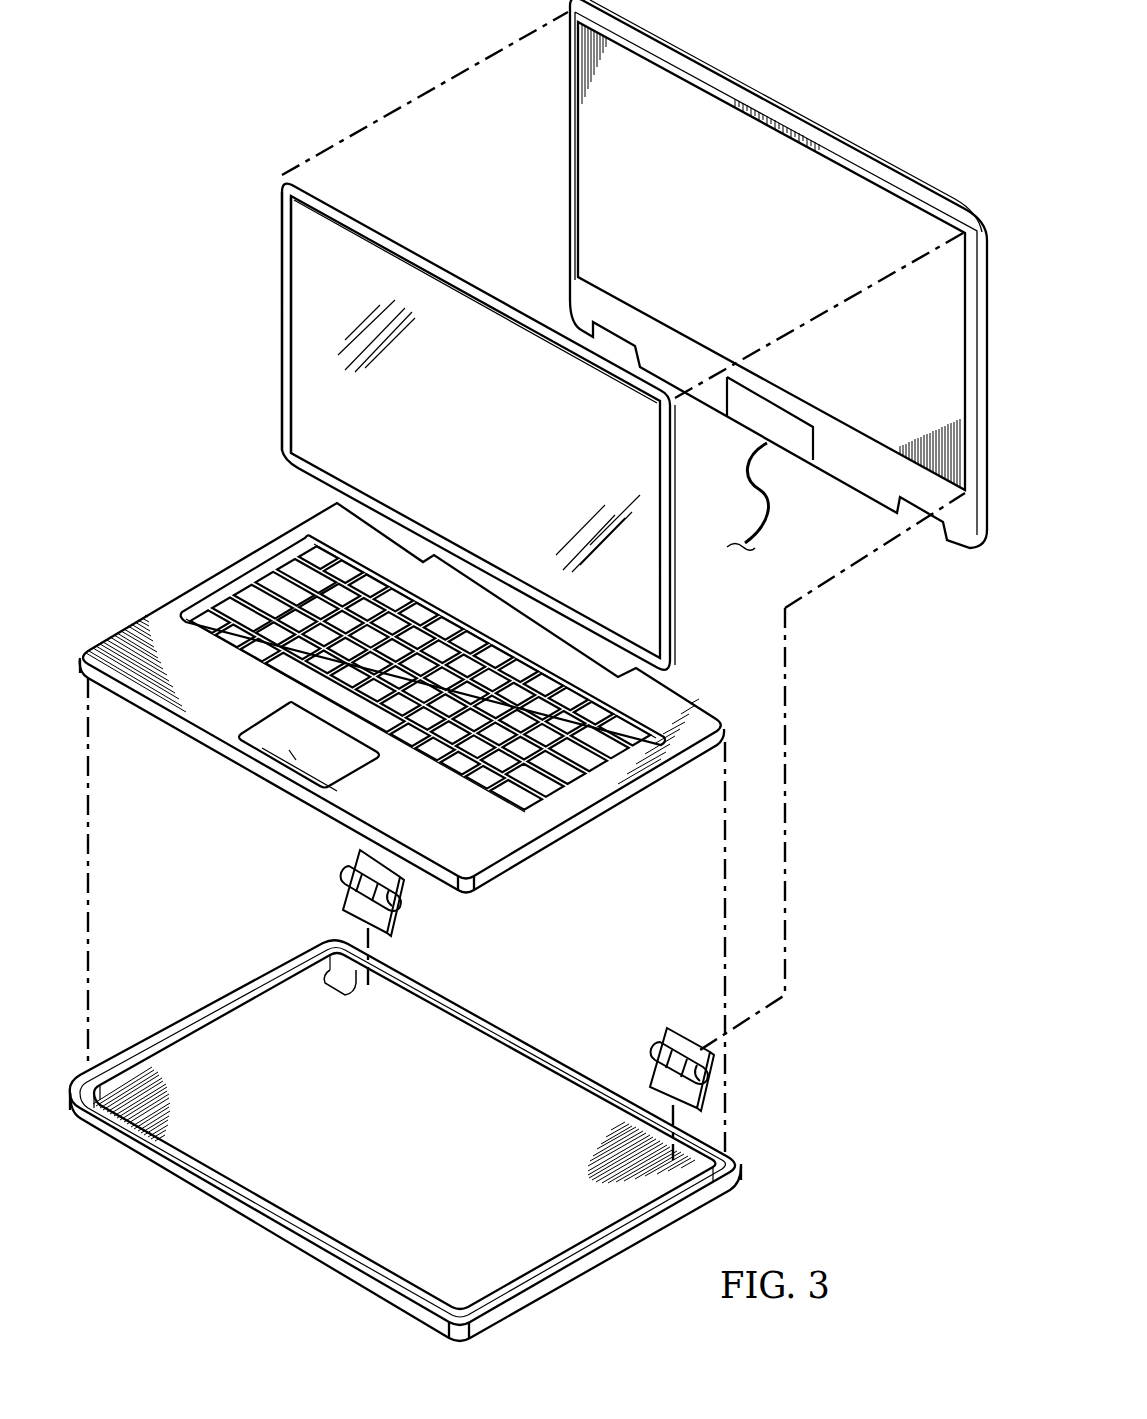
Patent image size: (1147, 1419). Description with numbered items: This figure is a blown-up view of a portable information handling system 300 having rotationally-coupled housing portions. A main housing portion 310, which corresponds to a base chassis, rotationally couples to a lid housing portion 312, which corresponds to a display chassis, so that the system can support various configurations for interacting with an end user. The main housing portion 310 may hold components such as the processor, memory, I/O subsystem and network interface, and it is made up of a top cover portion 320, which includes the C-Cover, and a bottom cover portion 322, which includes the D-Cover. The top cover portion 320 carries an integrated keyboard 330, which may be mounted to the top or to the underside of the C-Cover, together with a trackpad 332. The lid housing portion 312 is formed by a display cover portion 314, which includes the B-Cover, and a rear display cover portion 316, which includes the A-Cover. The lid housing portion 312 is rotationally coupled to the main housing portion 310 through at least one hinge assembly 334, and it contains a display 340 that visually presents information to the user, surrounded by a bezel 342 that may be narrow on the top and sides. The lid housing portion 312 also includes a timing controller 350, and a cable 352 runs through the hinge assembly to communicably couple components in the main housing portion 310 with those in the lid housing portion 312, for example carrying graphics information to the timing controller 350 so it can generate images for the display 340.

The portable information handling system 300 is at (203, 117).
The main housing portion 310 is at (127, 566).
The lid housing portion 312 is at (368, 75).
The display cover portion 314 is at (283, 385).
The rear display cover portion 316 is at (780, 102).
The top cover portion 320 is at (178, 722).
The bottom cover portion 322 is at (262, 1223).
The keyboard 330 is at (236, 584).
The trackpad 332 is at (293, 740).
The hinge assembly 334 is at (343, 873).
The display 340 is at (528, 487).
The bezel 342 is at (281, 298).
The timing controller (TCON) 350 is at (790, 424).
The cable 352 is at (772, 507).